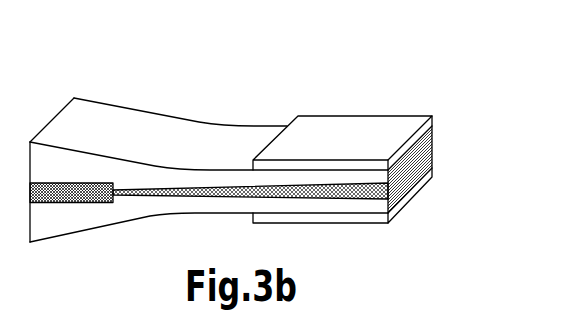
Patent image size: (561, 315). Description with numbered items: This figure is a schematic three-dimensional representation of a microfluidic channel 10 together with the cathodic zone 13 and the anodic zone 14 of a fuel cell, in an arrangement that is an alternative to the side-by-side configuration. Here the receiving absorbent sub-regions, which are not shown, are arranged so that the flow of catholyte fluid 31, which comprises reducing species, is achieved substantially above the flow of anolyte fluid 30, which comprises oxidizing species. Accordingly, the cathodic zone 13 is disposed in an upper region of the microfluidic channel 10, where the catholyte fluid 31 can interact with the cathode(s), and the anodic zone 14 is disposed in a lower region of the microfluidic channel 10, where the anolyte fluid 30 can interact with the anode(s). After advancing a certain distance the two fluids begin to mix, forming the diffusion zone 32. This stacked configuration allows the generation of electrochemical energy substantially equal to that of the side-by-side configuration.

The microfluidic channel 10 is at (266, 161).
The catholyte fluid 31 is at (110, 132).
The cathodic zone 13 is at (358, 140).
The anodic zone 14 is at (358, 225).
The anolyte fluid 30 is at (87, 215).
The diffusion zone 32 is at (413, 162).